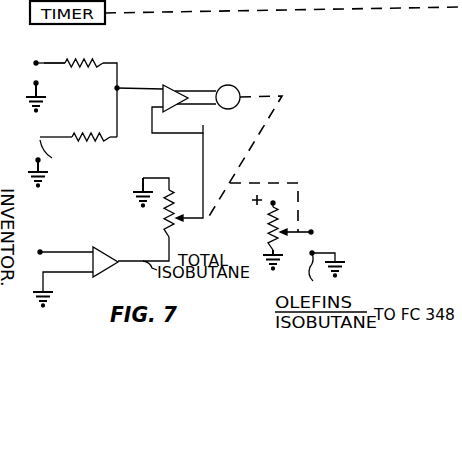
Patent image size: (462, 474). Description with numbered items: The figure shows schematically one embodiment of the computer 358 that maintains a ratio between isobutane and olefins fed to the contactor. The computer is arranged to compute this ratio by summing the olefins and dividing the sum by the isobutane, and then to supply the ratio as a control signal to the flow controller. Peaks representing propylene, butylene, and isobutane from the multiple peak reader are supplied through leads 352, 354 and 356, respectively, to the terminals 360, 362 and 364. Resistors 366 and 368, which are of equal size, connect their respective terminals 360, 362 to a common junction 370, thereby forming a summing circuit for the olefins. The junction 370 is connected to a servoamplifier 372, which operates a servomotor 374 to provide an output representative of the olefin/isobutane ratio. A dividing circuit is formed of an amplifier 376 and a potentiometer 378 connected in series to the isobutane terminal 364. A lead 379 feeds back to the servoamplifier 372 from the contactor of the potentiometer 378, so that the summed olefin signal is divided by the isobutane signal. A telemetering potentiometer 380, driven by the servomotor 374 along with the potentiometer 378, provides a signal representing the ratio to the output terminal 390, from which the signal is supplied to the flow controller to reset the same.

The lead 352 is at (36, 62).
The lead 354 is at (114, 163).
The lead 356 is at (41, 250).
The computer 358 is at (252, 166).
The terminal 360 is at (47, 60).
The terminal 362 is at (41, 133).
The terminal 364 is at (40, 255).
The resistor 366 is at (97, 59).
The resistor 368 is at (100, 140).
The common junction 370 is at (118, 82).
The servoamplifier 372 is at (162, 85).
The servomotor 374 is at (240, 75).
The amplifier 376 is at (117, 258).
The potentiometer 378 is at (175, 228).
The lead 379 is at (203, 125).
The telemetering potentiometer 380 is at (270, 240).
The output terminal 390 is at (312, 231).